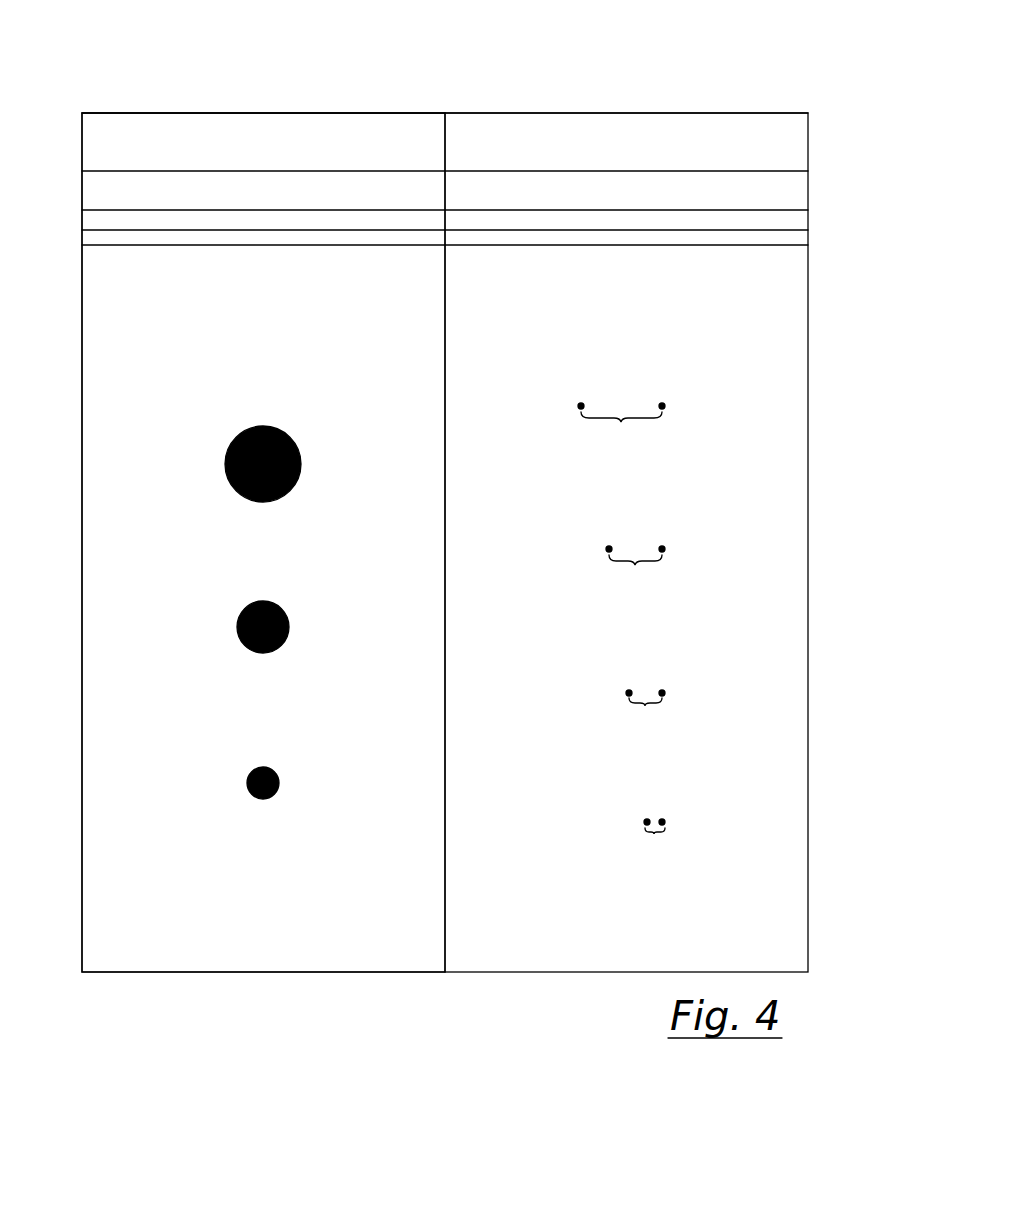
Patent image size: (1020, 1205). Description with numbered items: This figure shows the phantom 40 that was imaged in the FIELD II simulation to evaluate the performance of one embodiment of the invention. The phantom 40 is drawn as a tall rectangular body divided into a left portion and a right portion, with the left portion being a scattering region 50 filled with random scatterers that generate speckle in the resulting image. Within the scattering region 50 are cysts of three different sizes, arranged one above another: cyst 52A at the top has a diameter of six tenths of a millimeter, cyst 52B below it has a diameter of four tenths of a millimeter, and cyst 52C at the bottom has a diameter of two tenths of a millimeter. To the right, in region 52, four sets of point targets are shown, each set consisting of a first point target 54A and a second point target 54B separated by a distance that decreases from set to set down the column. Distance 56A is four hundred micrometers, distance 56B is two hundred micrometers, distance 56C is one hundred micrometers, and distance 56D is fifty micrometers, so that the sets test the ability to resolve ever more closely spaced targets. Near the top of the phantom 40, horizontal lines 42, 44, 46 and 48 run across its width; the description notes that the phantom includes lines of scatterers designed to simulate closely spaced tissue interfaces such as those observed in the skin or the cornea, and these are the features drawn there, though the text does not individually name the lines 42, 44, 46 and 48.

The phantom 40 is at (241, 68).
The outer housing layer 42 is at (548, 112).
The first layer 44 is at (808, 190).
The second layer 46 is at (808, 214).
The third layer 48 is at (808, 237).
The scattering region 50 is at (133, 330).
The region 52 is at (765, 281).
The cyst 52A is at (229, 440).
The cyst 52B is at (238, 613).
The cyst 52C is at (249, 773).
The point target 54A is at (580, 402).
The point target 54B is at (663, 402).
The distance 56A is at (621, 434).
The distance 56B is at (635, 575).
The distance 56C is at (647, 719).
The distance 56D is at (657, 848).